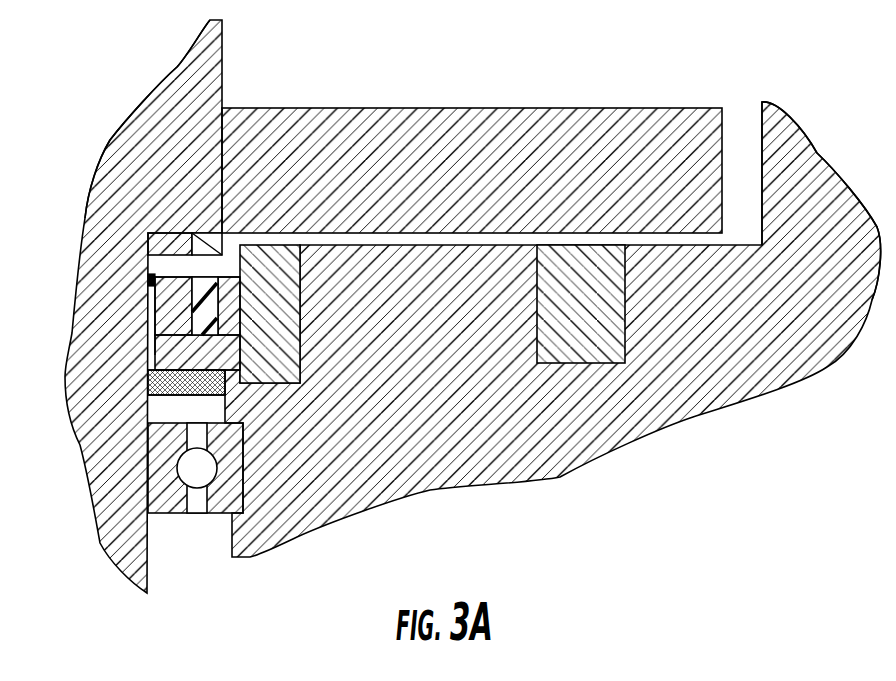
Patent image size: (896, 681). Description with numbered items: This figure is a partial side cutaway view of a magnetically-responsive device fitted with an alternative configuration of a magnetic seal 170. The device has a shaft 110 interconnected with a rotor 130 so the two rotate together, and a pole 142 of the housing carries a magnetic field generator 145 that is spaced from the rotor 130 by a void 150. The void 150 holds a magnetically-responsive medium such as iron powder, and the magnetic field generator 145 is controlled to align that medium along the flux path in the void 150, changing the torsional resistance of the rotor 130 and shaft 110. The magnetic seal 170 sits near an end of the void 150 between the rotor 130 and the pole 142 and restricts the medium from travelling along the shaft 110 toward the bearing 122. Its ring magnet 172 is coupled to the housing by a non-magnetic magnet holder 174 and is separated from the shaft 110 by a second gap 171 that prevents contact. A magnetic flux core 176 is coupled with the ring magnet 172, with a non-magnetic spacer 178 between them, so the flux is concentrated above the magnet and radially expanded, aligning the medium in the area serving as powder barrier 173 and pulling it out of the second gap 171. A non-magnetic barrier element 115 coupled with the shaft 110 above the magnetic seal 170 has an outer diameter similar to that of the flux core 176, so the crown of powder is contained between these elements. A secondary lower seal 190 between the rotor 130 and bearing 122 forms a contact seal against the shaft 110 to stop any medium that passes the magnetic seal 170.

The shaft 110 is at (140, 167).
The barrier element 115 is at (205, 297).
The bearing 122 is at (190, 540).
The rotor 130 is at (593, 147).
The pole 142 is at (770, 368).
The magnetic field generator 145 is at (592, 335).
The void 150 is at (757, 232).
The magnetic seal 170 is at (120, 397).
The second gap 171 is at (148, 265).
The ring magnet 172 is at (183, 312).
The powder barrier 173 is at (207, 267).
The magnet holder 174 is at (285, 347).
The magnetic flux core 176 is at (160, 355).
The non-magnetic spacer 178 is at (208, 255).
The secondary lower seal 190 is at (141, 378).